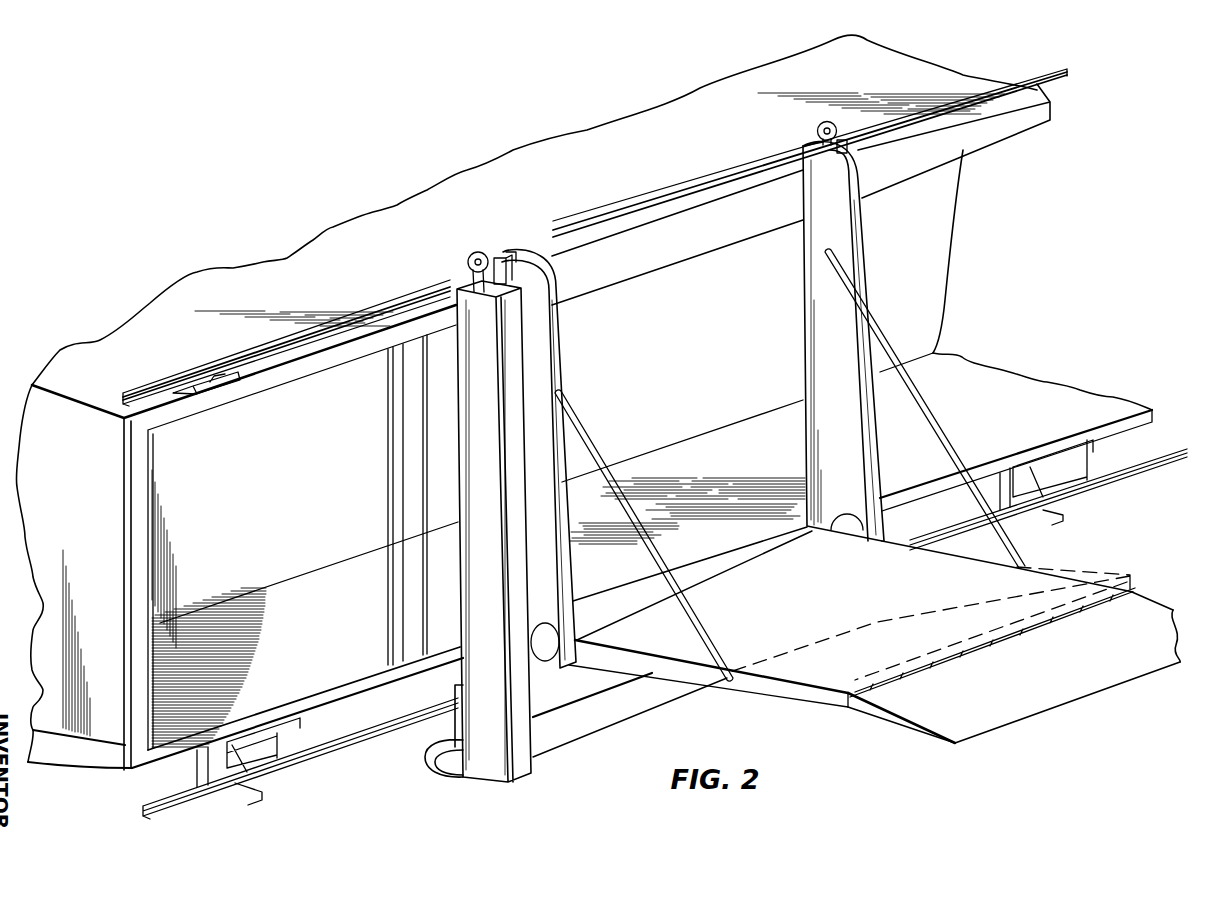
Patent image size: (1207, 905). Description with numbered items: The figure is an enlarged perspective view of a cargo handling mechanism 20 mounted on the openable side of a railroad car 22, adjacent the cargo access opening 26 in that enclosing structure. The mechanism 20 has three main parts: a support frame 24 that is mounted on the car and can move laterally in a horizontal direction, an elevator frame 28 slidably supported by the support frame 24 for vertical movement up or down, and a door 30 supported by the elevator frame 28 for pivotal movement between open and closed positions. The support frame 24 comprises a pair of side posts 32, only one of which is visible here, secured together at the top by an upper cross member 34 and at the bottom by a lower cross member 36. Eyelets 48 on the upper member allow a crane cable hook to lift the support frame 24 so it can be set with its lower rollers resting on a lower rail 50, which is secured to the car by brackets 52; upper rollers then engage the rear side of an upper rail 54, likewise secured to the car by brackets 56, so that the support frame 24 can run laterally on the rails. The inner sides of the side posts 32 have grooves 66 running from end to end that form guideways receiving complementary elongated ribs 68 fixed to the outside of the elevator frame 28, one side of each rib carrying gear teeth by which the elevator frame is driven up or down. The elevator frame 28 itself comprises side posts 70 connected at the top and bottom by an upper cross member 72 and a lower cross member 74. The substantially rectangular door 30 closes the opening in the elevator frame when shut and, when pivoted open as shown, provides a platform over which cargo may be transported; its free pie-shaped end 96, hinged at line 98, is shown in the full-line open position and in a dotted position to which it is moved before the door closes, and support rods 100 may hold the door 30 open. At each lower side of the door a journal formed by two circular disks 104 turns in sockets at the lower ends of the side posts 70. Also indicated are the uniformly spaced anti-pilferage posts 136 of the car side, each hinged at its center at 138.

The cargo handling mechanism 20 is at (905, 298).
The railroad car 22 is at (402, 216).
The support frame 24 is at (456, 779).
The cargo access opening 26 is at (165, 480).
The elevator frame 28 is at (790, 297).
The door 30 is at (757, 687).
The side posts 32 is at (470, 388).
The upper cross member 34 is at (612, 282).
The lower cross member 36 is at (600, 722).
The eyelets 48 is at (481, 251).
The lower rail 50 is at (336, 745).
The brackets 52 is at (275, 745).
The upper rail 54 is at (250, 350).
The brackets 56 is at (240, 370).
The grooves 66 is at (488, 290).
The ribs 68 is at (529, 252).
The side posts 70 is at (558, 352).
The upper cross member 72 is at (690, 207).
The lower cross member 74 is at (703, 565).
The free pie-shaped end 96 is at (809, 697).
The hinge line 98 is at (1010, 640).
The support rods 100 is at (590, 433).
The circular disks 104 is at (560, 642).
The posts 136 is at (395, 452).
The hinge 138 is at (422, 505).